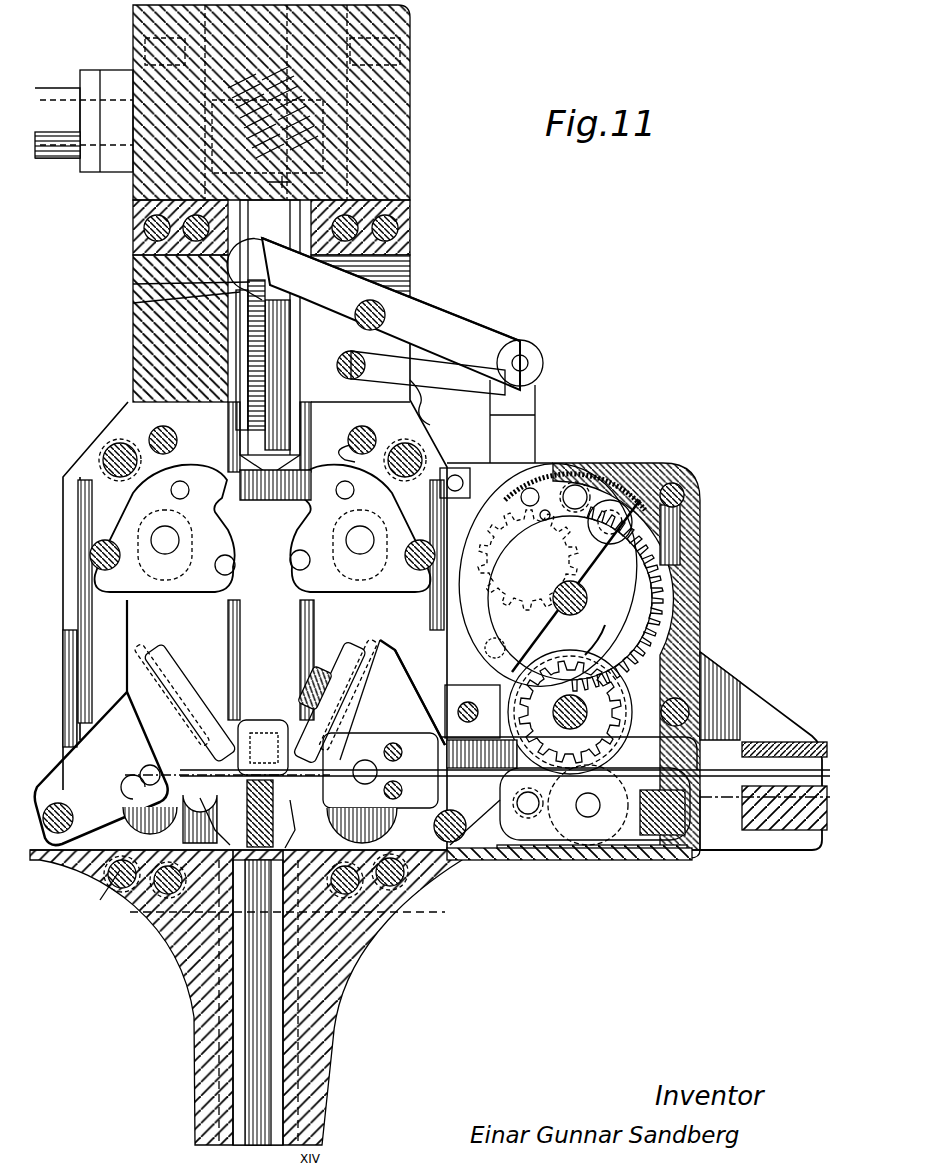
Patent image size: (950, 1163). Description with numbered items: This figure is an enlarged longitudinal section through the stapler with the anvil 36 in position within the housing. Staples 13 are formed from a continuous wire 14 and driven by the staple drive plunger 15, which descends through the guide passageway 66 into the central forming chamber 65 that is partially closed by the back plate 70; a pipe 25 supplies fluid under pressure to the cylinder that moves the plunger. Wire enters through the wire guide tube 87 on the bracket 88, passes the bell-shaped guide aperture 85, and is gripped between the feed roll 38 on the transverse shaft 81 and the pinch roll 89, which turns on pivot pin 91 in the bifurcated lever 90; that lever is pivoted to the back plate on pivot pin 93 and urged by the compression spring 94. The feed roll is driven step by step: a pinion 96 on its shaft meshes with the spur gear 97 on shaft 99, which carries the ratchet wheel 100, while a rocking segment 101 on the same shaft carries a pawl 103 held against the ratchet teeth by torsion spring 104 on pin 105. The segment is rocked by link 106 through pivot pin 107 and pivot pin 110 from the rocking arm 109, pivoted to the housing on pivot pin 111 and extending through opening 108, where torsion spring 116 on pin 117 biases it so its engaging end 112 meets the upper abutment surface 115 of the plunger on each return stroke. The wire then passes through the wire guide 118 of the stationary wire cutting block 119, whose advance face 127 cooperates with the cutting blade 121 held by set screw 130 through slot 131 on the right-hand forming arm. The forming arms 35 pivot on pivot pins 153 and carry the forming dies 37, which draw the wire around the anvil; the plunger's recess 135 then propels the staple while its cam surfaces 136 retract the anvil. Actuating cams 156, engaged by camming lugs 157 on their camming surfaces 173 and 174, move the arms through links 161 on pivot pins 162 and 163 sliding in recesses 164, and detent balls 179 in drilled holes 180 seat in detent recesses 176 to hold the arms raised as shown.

The staples 13 is at (230, 775).
The wire 14 is at (770, 745).
The staple drive plunger 15 is at (270, 420).
The pipe 25 is at (60, 100).
The forming arms 35 is at (95, 858).
The anvil 36 is at (262, 895).
The forming dies 37 is at (180, 640).
The feed roll 38 is at (625, 640).
The forming chamber 65 is at (235, 838).
The guide passageway 66 is at (265, 300).
The back plate 70 is at (78, 440).
The transverse shaft 81 is at (580, 715).
The guide aperture 85 is at (712, 790).
The wire guide tube 87 is at (810, 822).
The bracket 88 is at (795, 735).
The pinch roll 89 is at (590, 845).
The bifurcated lever 90 is at (527, 815).
The pivot pin 91 is at (585, 818).
The pivot pin 93 is at (490, 845).
The compression spring 94 is at (645, 855).
The pinion 96 is at (585, 670).
The spur gear 97 is at (640, 600).
The shaft 99 is at (555, 603).
The ratchet wheel 100 is at (600, 620).
The rocking segment 101 is at (548, 478).
The pawl 103 is at (495, 580).
The torsion spring 104 is at (577, 488).
The pin 105 is at (600, 500).
The link 106 is at (525, 432).
The pivot pin 107 is at (492, 657).
The opening 108 is at (425, 383).
The rocking arm 109 is at (468, 322).
The pivot pin 110 is at (521, 360).
The pivot pin 111 is at (385, 296).
The engaging end 112 is at (133, 280).
The upper abutment surface 115 is at (133, 303).
The torsion spring 116 is at (430, 426).
The pin 117 is at (265, 395).
The wire guide 118 is at (432, 757).
The wire cutting block 119 is at (390, 740).
The cutting blade 121 is at (415, 700).
The advance face 127 is at (288, 820).
The set screw 130 is at (262, 750).
The slot 131 is at (308, 700).
The recess 135 is at (290, 475).
The cam surfaces 136 is at (360, 310).
The pivot pins 153 is at (60, 850).
The actuating cams 156 is at (135, 500).
The camming lugs 157 is at (352, 365).
The links 161 is at (145, 640).
The pivot pins 162 is at (166, 552).
The pivot pins 163 is at (138, 776).
The recesses 164 is at (130, 922).
The camming surfaces 173 is at (203, 470).
The camming surface 174 is at (298, 550).
The detent recesses 176 is at (172, 490).
The detent balls 179 is at (435, 450).
The drilled holes 180 is at (135, 450).